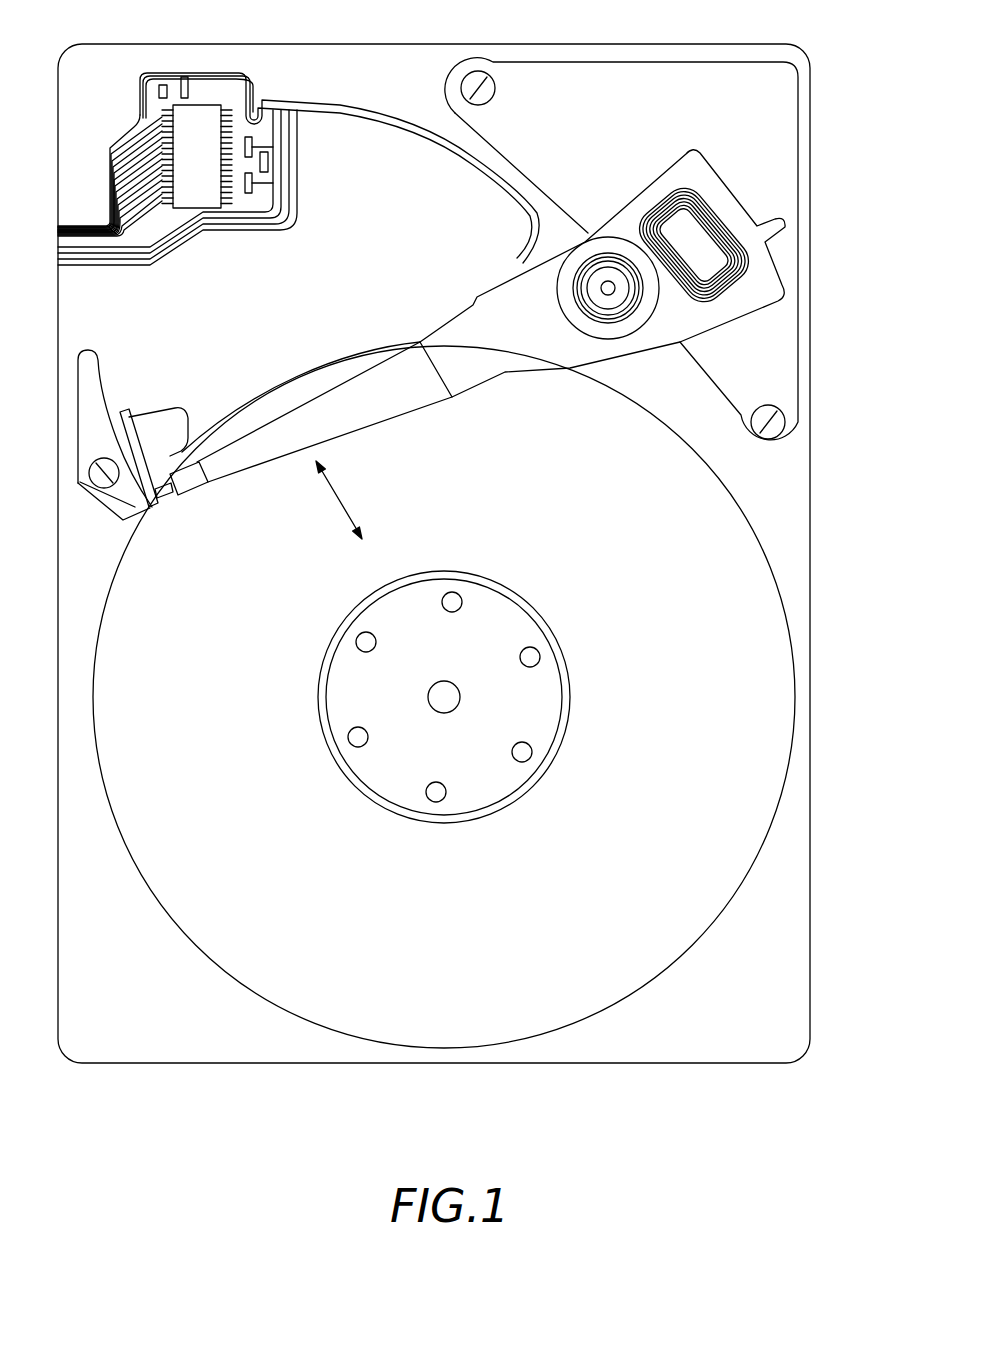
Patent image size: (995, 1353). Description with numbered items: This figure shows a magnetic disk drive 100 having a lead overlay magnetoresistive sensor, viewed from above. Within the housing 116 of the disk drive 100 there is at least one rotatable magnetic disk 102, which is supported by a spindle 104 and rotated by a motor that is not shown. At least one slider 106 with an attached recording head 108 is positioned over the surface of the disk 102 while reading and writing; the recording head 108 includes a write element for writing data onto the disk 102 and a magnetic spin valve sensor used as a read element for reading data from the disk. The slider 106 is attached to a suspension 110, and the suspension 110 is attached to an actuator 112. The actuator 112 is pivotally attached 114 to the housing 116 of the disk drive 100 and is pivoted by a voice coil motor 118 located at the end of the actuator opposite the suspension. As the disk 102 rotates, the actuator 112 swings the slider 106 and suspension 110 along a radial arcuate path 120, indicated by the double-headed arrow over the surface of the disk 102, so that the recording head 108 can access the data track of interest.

The magnetic disk drive 100 is at (464, 626).
The rotatable magnetic disk 102 is at (742, 520).
The spindle 104 is at (395, 770).
The slider 106 is at (198, 497).
The recording head 108 is at (170, 507).
The suspension 110 is at (374, 413).
The actuator 112 is at (440, 337).
The pivotal attachment 114 is at (608, 297).
The housing 116 is at (805, 535).
The voice coil motor 118 is at (714, 178).
The radial arcuate path 120 is at (340, 507).